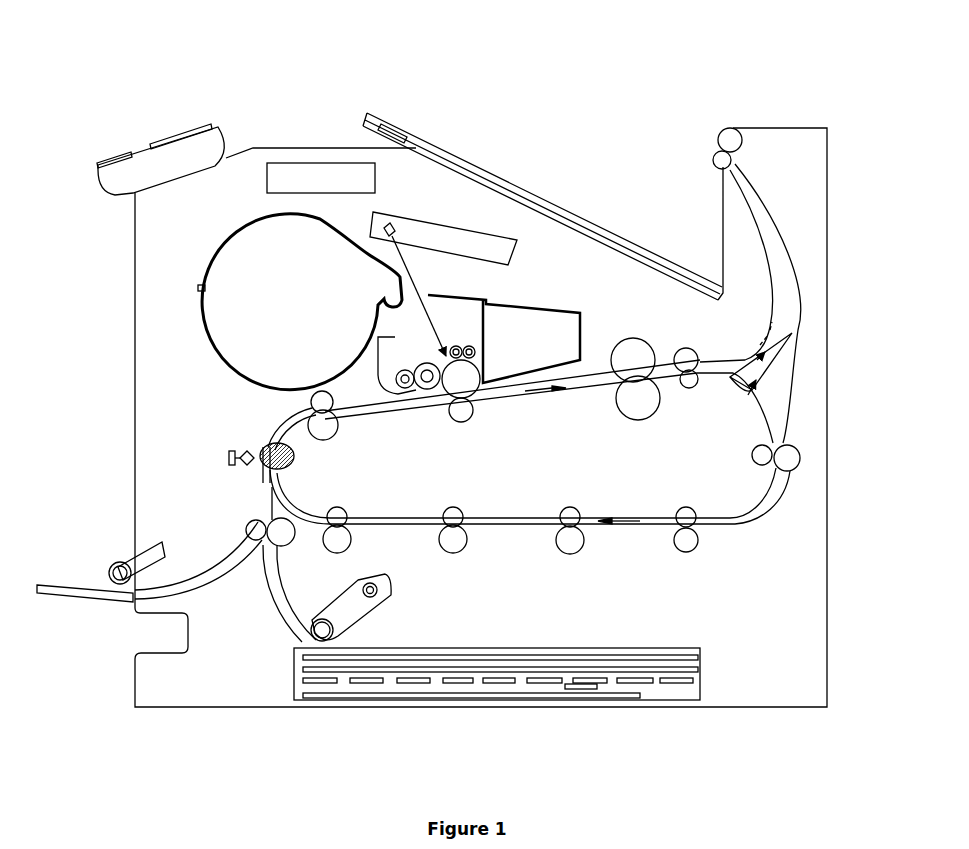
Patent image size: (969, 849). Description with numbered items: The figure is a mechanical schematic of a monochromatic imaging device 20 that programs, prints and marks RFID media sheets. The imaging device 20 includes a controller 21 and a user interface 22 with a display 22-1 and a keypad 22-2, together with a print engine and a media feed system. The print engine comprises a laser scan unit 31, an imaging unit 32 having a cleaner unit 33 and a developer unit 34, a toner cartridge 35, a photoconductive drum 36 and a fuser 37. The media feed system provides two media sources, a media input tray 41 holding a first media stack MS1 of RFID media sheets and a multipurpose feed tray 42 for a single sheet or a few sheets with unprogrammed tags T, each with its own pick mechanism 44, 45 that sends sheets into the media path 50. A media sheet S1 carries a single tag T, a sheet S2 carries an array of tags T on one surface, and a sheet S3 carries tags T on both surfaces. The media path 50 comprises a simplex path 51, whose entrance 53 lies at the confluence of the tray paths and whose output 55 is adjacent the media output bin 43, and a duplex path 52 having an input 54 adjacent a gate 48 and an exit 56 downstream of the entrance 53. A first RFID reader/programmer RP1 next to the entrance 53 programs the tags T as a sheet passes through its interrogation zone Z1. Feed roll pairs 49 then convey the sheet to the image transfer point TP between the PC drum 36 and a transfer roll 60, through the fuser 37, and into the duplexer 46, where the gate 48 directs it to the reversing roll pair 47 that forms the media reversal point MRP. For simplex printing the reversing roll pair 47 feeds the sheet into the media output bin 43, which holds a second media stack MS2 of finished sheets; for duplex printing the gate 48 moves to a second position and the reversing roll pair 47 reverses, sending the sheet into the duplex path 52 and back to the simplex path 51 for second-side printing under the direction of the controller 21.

The imaging device 20 is at (222, 48).
The controller 21 is at (321, 178).
The user interface 22 is at (221, 127).
The display 22-1 is at (170, 137).
The keypad 22-2 is at (112, 156).
The laser scan unit 31 is at (443, 284).
The imaging unit 32 is at (522, 292).
The cleaner unit 33 is at (471, 346).
The developer unit 34 is at (416, 357).
The toner cartridge 35 is at (300, 302).
The photoconductive drum 36 is at (461, 379).
The fuser 37 is at (630, 413).
The media input tray 41 is at (700, 667).
The multipurpose feed tray 42 is at (66, 586).
The media output bin 43 is at (600, 185).
The pick mechanism 44 is at (370, 576).
The pick mechanism 45 is at (158, 540).
The duplexer 46 is at (716, 84).
The reversing roll pair 47 is at (727, 128).
The gate 48 is at (748, 395).
The feed roll pairs 49 is at (335, 432).
The media path 50 is at (268, 440).
The simplex path 51 is at (398, 421).
The duplex path 52 is at (510, 512).
The entrance 53 is at (262, 508).
The input 54 is at (792, 430).
The output 55 is at (752, 157).
The exit 56 is at (283, 493).
The transfer roll 60 is at (466, 422).
The first RFID reader/programmer RP1 is at (227, 455).
The first interrogation zone Z1 is at (296, 452).
The image transfer point TP is at (492, 405).
The media reversal point MRP is at (712, 147).
The first media stack MS1 is at (502, 642).
The second media stack MS2 is at (428, 142).
The RFID media sheet S1 is at (602, 653).
The RFID media sheet S2 is at (668, 667).
The RFID media sheet S3 is at (652, 684).
The RFID tag T is at (395, 130).